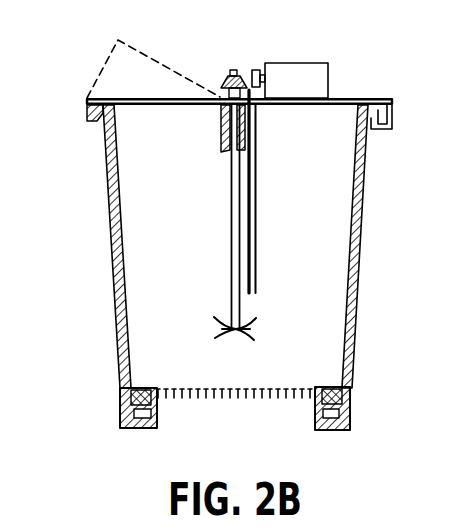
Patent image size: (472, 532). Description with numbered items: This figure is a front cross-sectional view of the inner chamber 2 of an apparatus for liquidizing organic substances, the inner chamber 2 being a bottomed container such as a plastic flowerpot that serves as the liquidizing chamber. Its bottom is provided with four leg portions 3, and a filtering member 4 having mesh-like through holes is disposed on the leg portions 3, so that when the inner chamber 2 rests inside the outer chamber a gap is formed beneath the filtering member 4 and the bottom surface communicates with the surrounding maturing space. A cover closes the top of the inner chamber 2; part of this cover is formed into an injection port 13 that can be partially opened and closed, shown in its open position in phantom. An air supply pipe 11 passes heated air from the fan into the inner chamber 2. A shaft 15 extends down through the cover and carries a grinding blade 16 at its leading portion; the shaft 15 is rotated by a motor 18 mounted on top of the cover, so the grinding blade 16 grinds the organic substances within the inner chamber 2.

The inner chamber 2 is at (113, 265).
The leg portions 3 is at (338, 408).
The filtering member 4 is at (281, 386).
The air supply pipe 11 is at (253, 128).
The injection port 13 is at (93, 75).
The shaft 15 is at (232, 210).
The grinding blade 16 is at (238, 331).
The motor 18 is at (328, 80).